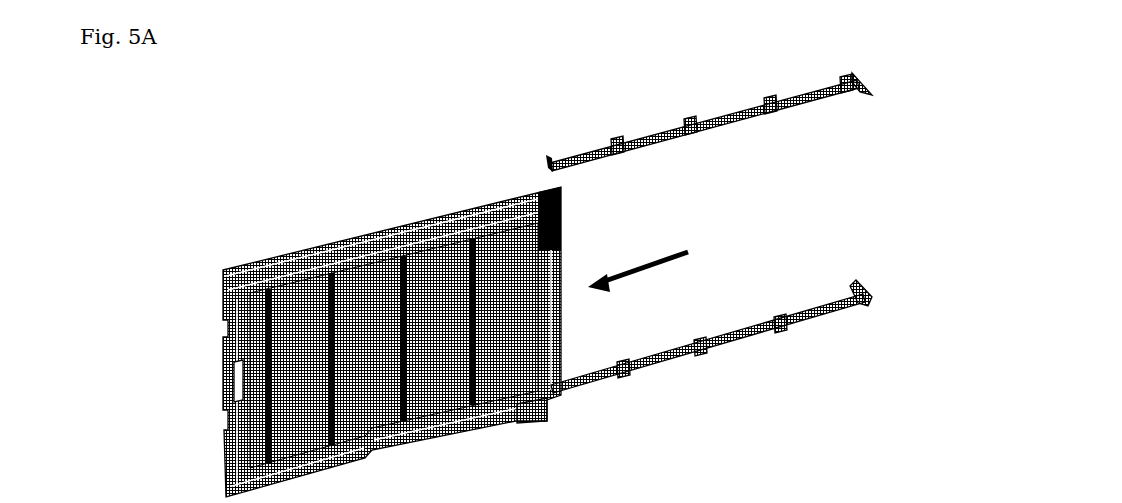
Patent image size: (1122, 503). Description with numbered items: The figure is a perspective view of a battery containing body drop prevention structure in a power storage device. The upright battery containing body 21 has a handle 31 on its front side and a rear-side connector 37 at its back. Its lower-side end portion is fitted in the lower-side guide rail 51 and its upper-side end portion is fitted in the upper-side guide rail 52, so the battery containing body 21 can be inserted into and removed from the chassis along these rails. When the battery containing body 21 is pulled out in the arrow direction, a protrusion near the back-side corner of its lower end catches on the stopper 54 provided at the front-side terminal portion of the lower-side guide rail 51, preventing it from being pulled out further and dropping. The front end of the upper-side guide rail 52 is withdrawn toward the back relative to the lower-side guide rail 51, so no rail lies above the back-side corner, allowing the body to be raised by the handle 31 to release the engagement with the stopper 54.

The battery containing body 21 is at (392, 321).
The handle 31 is at (194, 392).
The rear-side connector 37 is at (603, 216).
The lower-side guide rail 51 is at (711, 314).
The upper-side guide rail 52 is at (709, 136).
The stopper 54 is at (509, 435).